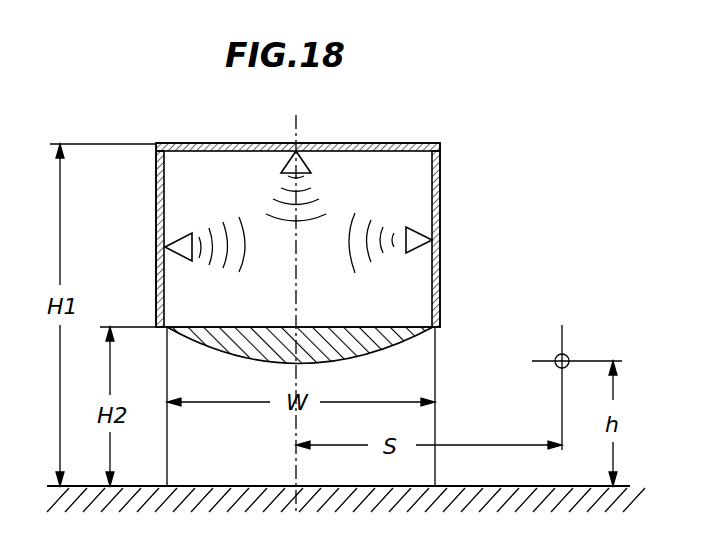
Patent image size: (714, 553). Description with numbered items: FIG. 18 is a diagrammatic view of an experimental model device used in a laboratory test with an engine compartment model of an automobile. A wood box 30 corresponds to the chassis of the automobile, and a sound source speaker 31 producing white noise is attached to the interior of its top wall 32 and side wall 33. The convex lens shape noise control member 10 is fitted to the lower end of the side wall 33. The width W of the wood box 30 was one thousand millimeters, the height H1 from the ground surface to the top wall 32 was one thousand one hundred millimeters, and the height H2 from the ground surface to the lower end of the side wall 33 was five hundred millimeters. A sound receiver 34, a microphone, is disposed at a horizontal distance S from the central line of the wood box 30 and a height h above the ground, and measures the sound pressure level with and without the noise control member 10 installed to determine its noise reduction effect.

The noise control member 10 is at (393, 343).
The wood box 30 is at (440, 213).
The sound source speaker 31 is at (304, 158).
The top wall 32 is at (403, 143).
The side wall 33 is at (440, 269).
The sound receiver 34 is at (568, 355).